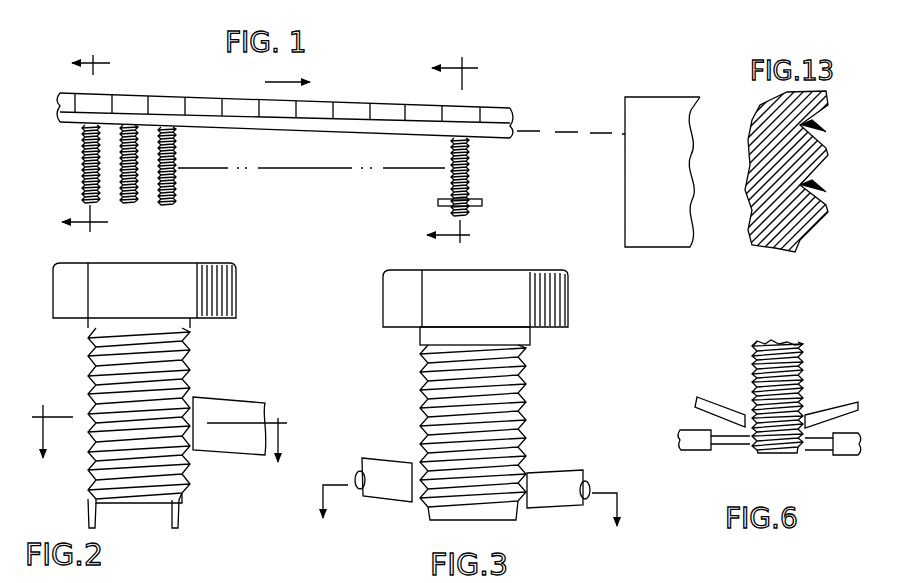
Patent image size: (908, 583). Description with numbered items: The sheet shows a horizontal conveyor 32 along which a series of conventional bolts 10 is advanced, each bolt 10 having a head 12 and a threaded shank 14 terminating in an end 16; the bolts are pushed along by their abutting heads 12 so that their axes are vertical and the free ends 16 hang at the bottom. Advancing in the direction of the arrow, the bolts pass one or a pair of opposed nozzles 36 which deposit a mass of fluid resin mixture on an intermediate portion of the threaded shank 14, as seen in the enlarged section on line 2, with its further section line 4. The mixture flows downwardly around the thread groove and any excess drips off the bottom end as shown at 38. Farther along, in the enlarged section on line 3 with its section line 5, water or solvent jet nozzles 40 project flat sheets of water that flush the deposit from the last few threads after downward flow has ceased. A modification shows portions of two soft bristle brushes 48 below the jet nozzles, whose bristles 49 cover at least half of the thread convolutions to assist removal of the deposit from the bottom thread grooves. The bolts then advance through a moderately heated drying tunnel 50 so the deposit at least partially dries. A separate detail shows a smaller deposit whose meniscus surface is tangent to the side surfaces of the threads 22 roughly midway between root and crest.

In FIG. 1, the bolt 10 is at (470, 152).
In FIG. 2, the bolt 10 is at (142, 411).
In FIG. 3, the bolt 10 is at (533, 382).
In FIG. 6, the bolt 10 is at (787, 342).
In FIG. 1, the head 12 is at (341, 108).
In FIG. 2, the threaded shank 14 is at (150, 352).
In FIG. 1, the end 16 is at (165, 205).
In FIG. 2, the end 16 is at (143, 500).
In FIG. 13, the threads 22 is at (765, 244).
In FIG. 1, the horizontal conveyor 32 is at (343, 130).
In FIG. 1, the nozzles 36 is at (82, 170).
In FIG. 2, the nozzles 36 is at (259, 402).
In FIG. 2, the excess drip 38 is at (180, 513).
In FIG. 1, the nozzles 40 is at (480, 206).
In FIG. 3, the nozzles 40 is at (550, 482).
In FIG. 6, the nozzles 40 is at (832, 410).
In FIG. 6, the soft bristle brushes 48 is at (698, 447).
In FIG. 6, the bristles 49 is at (815, 452).
In FIG. 1, the drying tunnel 50 is at (676, 168).
In FIG. 1, the section line 2— 2 is at (70, 135).
In FIG. 1, the section line 3— 3 is at (436, 150).
In FIG. 2, the section line 4— 4 is at (156, 453).
In FIG. 3, the section line 5— 5 is at (471, 525).